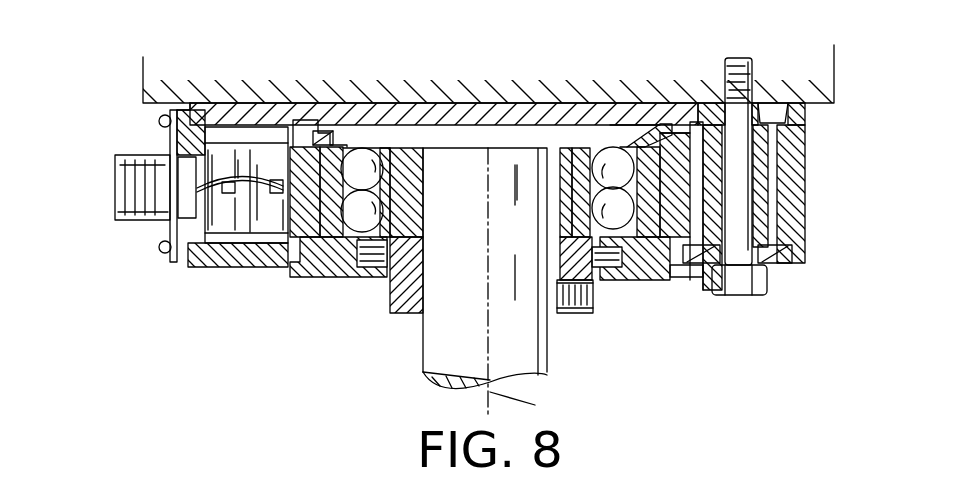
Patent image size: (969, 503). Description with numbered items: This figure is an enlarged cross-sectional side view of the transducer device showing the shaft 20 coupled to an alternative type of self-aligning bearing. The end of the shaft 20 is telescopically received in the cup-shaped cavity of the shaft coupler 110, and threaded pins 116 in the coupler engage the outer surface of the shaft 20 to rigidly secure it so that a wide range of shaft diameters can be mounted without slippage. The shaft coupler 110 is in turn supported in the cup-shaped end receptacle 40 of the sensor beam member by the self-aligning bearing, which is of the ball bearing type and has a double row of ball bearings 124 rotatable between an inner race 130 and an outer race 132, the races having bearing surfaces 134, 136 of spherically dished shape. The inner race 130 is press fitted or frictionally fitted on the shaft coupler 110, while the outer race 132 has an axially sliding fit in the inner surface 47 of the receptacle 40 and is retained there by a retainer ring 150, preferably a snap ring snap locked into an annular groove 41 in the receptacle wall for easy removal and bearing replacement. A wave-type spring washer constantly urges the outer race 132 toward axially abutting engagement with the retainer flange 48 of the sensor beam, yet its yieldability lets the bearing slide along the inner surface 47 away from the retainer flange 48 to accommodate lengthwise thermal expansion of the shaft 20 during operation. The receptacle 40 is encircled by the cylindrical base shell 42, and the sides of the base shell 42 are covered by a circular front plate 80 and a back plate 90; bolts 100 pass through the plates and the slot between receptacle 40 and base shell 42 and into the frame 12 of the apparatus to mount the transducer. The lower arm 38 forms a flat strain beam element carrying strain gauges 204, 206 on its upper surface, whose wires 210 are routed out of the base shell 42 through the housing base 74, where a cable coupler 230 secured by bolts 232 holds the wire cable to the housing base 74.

The frame 12 is at (143, 80).
The shaft 20 is at (543, 355).
The lower arm 38 is at (245, 230).
The cup-shaped end receptacle 40 is at (722, 168).
The annular groove 41 is at (668, 132).
The base shell 42 is at (798, 192).
The inner surface 47 is at (653, 235).
The retainer flange 48 is at (343, 270).
The housing base 74 is at (177, 253).
The front plate 80 is at (777, 257).
The back plate 90 is at (570, 103).
The bolts 100 is at (740, 287).
The shaft coupler 110 is at (407, 328).
The pins 116 is at (573, 293).
The ball bearings 124 is at (368, 208).
The inner race 130 is at (397, 152).
The outer race 132 is at (330, 152).
The bearing surface 134 is at (600, 157).
The bearing surface 136 is at (605, 202).
The retainer ring 150 is at (640, 133).
The strain gauge 204 is at (281, 178).
The strain gauge 206 is at (233, 187).
The wires 210 is at (240, 168).
The cable coupler 230 is at (120, 170).
The bolts 232 is at (160, 125).